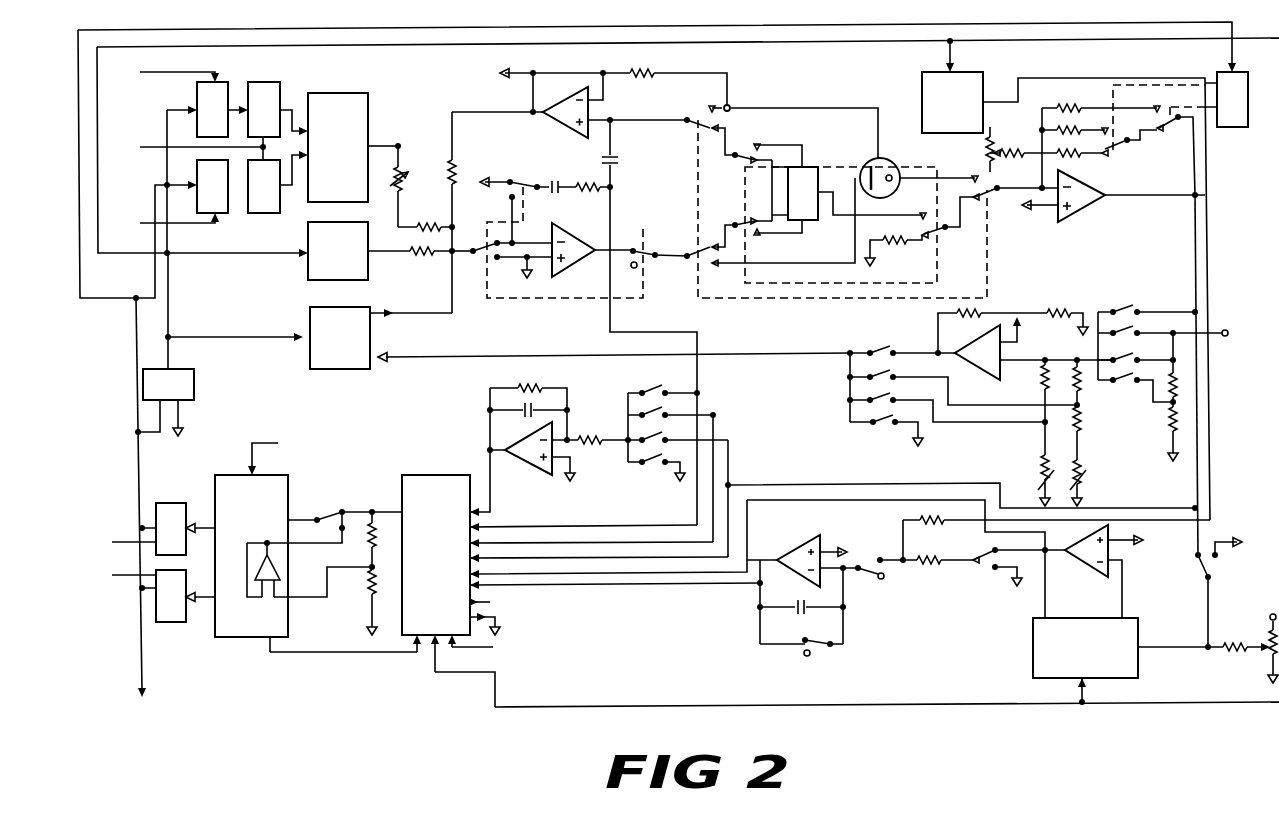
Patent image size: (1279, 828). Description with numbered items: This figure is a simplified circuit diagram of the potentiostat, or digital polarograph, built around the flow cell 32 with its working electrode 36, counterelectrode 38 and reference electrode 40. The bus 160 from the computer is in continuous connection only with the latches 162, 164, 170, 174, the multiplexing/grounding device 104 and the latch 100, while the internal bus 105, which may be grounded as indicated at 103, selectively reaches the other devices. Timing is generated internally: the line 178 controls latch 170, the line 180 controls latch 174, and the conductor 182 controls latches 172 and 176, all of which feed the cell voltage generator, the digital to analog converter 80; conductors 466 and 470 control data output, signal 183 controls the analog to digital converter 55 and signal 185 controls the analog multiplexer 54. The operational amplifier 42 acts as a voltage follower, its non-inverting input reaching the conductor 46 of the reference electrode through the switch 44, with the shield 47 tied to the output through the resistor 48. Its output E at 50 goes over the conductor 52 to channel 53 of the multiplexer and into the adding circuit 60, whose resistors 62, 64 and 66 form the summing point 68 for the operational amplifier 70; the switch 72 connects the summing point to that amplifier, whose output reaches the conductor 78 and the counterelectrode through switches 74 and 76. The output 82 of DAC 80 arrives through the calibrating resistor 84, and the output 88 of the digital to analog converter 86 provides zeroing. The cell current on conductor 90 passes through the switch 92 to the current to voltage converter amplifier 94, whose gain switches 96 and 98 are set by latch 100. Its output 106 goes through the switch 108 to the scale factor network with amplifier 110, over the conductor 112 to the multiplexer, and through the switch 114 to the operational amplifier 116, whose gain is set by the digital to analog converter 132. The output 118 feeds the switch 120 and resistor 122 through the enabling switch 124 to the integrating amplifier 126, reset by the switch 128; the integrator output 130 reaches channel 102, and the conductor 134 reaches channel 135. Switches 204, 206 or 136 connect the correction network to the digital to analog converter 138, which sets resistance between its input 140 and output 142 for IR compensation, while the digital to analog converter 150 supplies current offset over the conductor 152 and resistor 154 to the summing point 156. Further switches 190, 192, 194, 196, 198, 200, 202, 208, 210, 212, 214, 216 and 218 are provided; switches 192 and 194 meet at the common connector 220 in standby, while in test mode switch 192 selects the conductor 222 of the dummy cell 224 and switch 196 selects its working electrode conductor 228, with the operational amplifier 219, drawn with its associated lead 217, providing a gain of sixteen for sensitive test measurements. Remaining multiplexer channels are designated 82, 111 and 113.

The flow cell 32 is at (856, 176).
The working electrode 36 is at (893, 176).
The counterelectrode 38 is at (877, 160).
The reference electrode 40 is at (882, 168).
The operational amplifier 42 is at (592, 112).
The switch 44 is at (697, 116).
The conductor 46 is at (770, 106).
The shield 47 is at (733, 103).
The resistor 48 is at (657, 74).
The voltage output E 50 is at (516, 73).
The conductor 52 is at (716, 470).
The channel 53 is at (593, 538).
The analog multiplexer 54 is at (427, 472).
The analog to digital converter 55 is at (288, 473).
The adding circuit 60 is at (462, 166).
The resistor 62 is at (447, 167).
The resistor 64 is at (435, 225).
The resistor 66 is at (428, 254).
The summing point 68 is at (454, 256).
The operational amplifier 70 is at (567, 228).
The switch 72 is at (490, 253).
The switch 74 is at (649, 248).
The switch 76 is at (697, 248).
The conductor 78 is at (792, 264).
The digital to analog converter 80 is at (344, 93).
The analog voltage output 82 is at (382, 144).
The calibrating resistor 84 is at (412, 186).
The digital to analog converter 86 is at (308, 276).
The analog voltage output 88 is at (402, 251).
The conductor 90 is at (928, 178).
The switch 92 is at (960, 197).
The current to voltage converter amplifier 94 is at (1087, 210).
The switch 96 is at (1073, 147).
The switch 98 is at (1160, 133).
The latch 100 is at (1227, 127).
The channel 102 is at (652, 583).
The ground 103 is at (182, 415).
The multiplexing/grounding device 104 is at (196, 383).
The internal bus 105 is at (213, 255).
The analog current output 106 is at (1138, 197).
The switch 108 is at (1122, 308).
The operational amplifier 110 is at (965, 365).
The channel 111 is at (526, 523).
The conductor 112 is at (900, 483).
The channel 113 is at (527, 557).
The switch 114 is at (1212, 568).
The operational amplifier 116 is at (1118, 551).
The output 118 is at (1035, 552).
The switch 120 is at (980, 562).
The resistor 122 is at (927, 564).
The switch 124 is at (868, 557).
The integrating amplifier 126 is at (802, 542).
The switch 128 is at (818, 650).
The output 130 is at (717, 577).
The digital to analog converter 132 is at (1146, 663).
The conductor 134 is at (950, 497).
The channel 135 is at (590, 568).
The switch 136 is at (882, 346).
The digital to analog converter 138 is at (323, 370).
The input 140 is at (417, 360).
The output 142 is at (407, 312).
The digital to analog converter 150 is at (928, 68).
The conductor 152 is at (1063, 77).
The resistor 154 is at (930, 523).
The summing point 156 is at (847, 577).
The bus 160 is at (1236, 25).
The latch 162 is at (165, 500).
The latch 164 is at (170, 623).
The latch 170 is at (220, 81).
The latch 172 is at (268, 82).
The latch 174 is at (222, 215).
The latch 176 is at (263, 213).
The line 178 is at (200, 72).
The line 180 is at (172, 223).
The conductor 182 is at (153, 147).
The internal timing signal 183 is at (270, 443).
The internal timing signal 185 is at (485, 648).
The switch 190 is at (530, 183).
The switch 192 is at (740, 152).
The switch 194 is at (745, 220).
The switch 196 is at (940, 234).
The switch 198 is at (1180, 329).
The switch 200 is at (1144, 397).
The switch 202 is at (1143, 383).
The switch 204 is at (895, 372).
The switch 206 is at (895, 395).
The switch 208 is at (882, 425).
The switch 210 is at (650, 385).
The switch 212 is at (628, 407).
The switch 214 is at (640, 446).
The switch 216 is at (650, 468).
The amplifier 217 is at (490, 470).
The switch 218 is at (327, 513).
The operational amplifier 219 is at (537, 476).
The common connector 220 is at (770, 185).
The conductor 222 is at (793, 147).
The dummy cell 224 is at (813, 166).
The working electrode conductor 228 is at (882, 214).
The conductor 466 is at (130, 542).
The conductor 470 is at (130, 577).